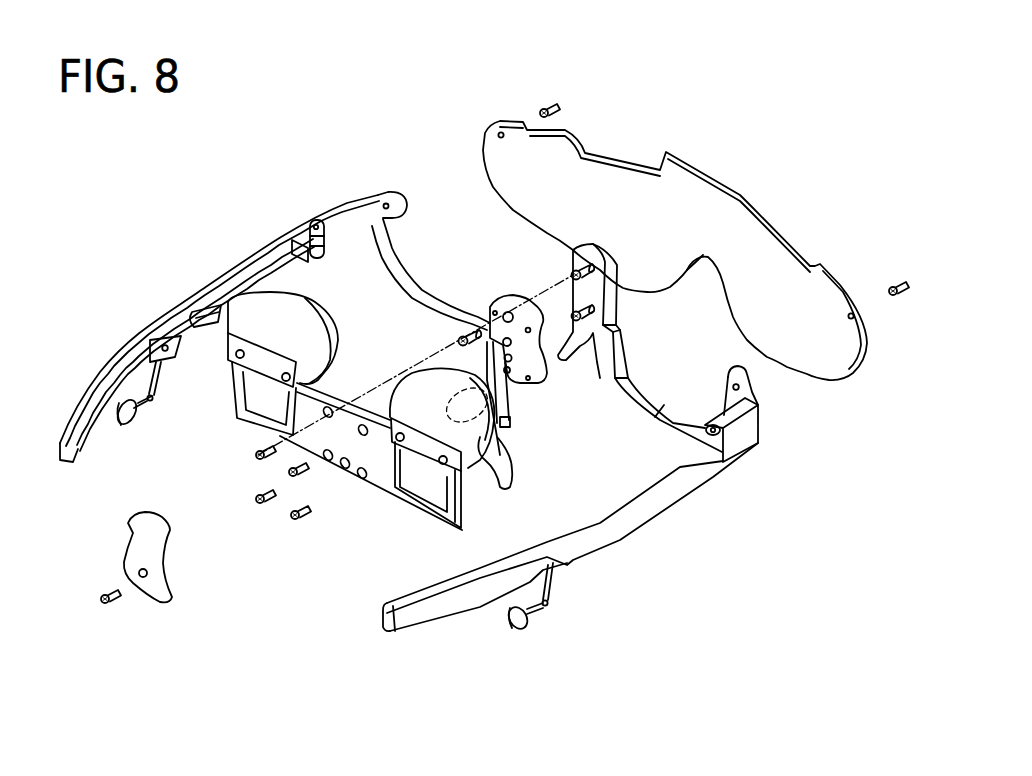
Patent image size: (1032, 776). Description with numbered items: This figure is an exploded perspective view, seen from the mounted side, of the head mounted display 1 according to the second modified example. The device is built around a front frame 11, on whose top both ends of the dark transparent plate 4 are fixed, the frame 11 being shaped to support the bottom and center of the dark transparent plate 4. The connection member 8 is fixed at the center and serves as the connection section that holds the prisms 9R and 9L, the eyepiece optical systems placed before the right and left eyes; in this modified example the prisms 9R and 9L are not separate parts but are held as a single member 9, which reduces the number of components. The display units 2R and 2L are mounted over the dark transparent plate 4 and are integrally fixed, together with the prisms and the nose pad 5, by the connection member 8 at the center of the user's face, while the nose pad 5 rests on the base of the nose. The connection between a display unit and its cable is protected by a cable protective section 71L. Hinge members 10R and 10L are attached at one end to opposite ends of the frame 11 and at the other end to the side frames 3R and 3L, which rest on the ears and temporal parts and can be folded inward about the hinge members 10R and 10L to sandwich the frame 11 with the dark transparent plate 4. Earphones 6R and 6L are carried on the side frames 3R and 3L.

The head mounted display 1 is at (748, 103).
The dark transparent plate 4 is at (633, 178).
The connection member 8 is at (512, 300).
The hinge member 10L is at (343, 212).
The hinge member 10R is at (745, 442).
The side frame 3L is at (243, 268).
The side frame 3R is at (658, 498).
The cable protective section 71L is at (195, 311).
The display unit 2L is at (307, 308).
The display unit 2R is at (476, 438).
The frame 11 is at (425, 298).
The nose pad 5 is at (507, 395).
The earphone 6L is at (136, 422).
The earphone 6R is at (525, 631).
The single member 9 is at (380, 478).
The prism 9L is at (256, 407).
The prism 9R is at (420, 480).